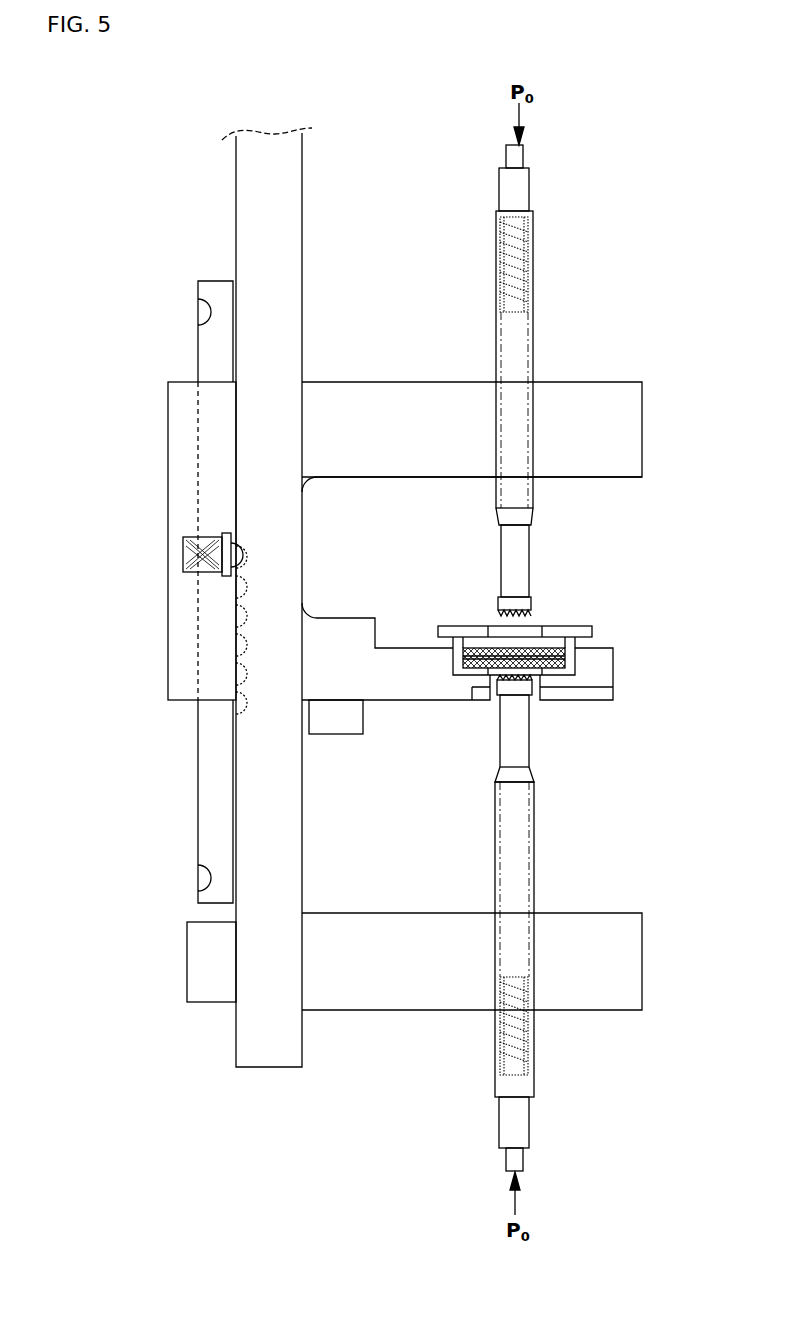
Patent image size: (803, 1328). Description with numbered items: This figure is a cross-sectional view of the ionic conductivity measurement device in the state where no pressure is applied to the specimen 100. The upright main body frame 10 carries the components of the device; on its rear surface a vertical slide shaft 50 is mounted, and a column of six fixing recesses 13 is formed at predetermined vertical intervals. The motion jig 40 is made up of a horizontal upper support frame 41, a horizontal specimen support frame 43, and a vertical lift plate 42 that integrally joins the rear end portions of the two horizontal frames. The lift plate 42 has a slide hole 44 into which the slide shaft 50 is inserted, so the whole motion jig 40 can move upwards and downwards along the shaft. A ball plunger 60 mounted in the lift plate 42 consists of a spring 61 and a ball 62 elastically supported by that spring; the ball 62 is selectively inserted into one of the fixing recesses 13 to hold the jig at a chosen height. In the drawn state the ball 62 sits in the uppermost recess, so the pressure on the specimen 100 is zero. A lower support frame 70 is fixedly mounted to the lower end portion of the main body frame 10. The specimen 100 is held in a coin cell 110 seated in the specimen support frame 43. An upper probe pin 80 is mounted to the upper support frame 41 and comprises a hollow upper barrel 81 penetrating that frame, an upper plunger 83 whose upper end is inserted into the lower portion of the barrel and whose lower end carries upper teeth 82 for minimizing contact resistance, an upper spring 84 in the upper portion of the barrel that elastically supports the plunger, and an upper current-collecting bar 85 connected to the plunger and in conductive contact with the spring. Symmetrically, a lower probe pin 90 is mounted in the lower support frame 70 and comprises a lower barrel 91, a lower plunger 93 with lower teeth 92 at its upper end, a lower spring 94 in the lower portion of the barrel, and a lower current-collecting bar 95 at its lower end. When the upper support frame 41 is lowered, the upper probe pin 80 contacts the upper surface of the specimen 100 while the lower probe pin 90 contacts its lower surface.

The main body frame 10 is at (253, 203).
The fixing recesses 13 is at (237, 615).
The motion jig 40 is at (145, 692).
The upper support frame 41 is at (642, 432).
The lift plate 42 is at (177, 632).
The specimen support frame 43 is at (613, 668).
The slide hole 44 is at (205, 683).
The slide shaft 50 is at (206, 347).
The ball plunger 60 is at (159, 523).
The spring 61 is at (187, 548).
The ball 62 is at (222, 542).
The lower support frame 70 is at (642, 963).
The upper probe pin 80 is at (544, 380).
The upper barrel 81 is at (534, 352).
The upper teeth 82 is at (497, 616).
The upper plunger 83 is at (507, 555).
The upper spring 84 is at (524, 253).
The upper current-collecting bar 85 is at (529, 183).
The lower probe pin 90 is at (544, 923).
The lower barrel 91 is at (535, 884).
The lower teeth 92 is at (497, 684).
The lower plunger 93 is at (529, 742).
The lower spring 94 is at (524, 1037).
The lower current-collecting bar 95 is at (529, 1160).
The specimen 100 is at (560, 664).
The coin cell 110 is at (583, 626).